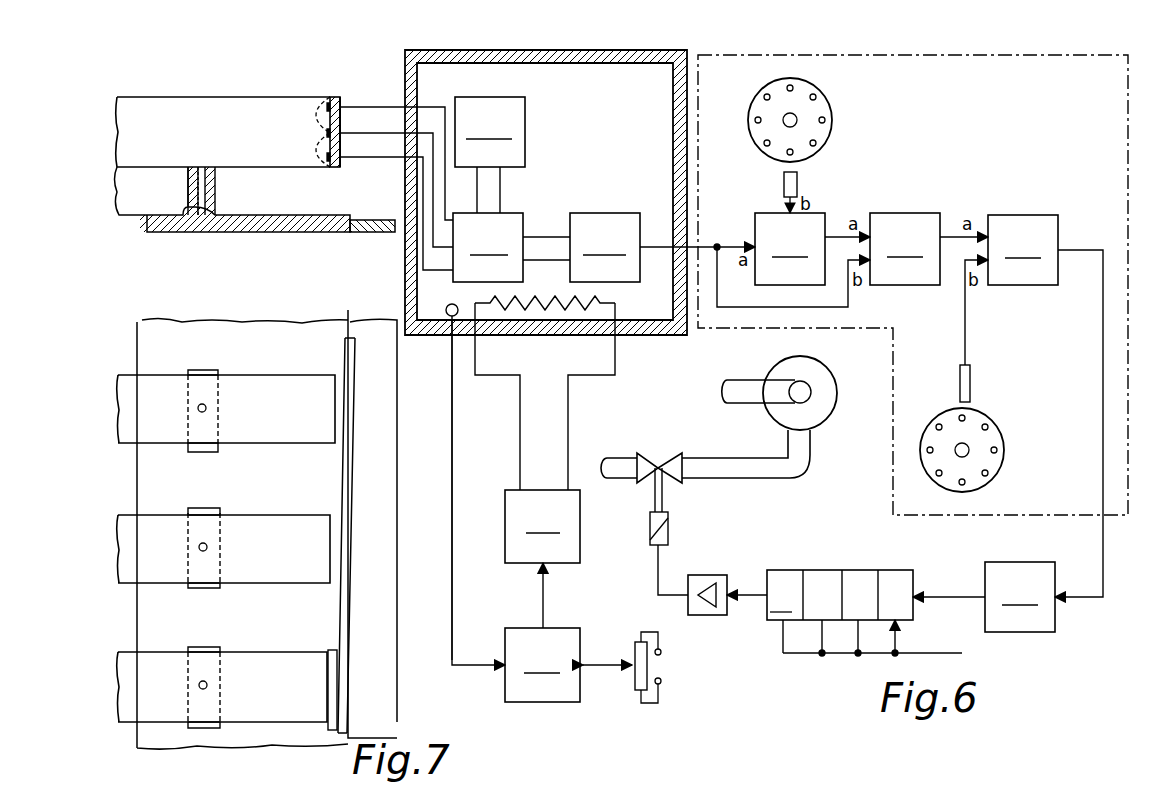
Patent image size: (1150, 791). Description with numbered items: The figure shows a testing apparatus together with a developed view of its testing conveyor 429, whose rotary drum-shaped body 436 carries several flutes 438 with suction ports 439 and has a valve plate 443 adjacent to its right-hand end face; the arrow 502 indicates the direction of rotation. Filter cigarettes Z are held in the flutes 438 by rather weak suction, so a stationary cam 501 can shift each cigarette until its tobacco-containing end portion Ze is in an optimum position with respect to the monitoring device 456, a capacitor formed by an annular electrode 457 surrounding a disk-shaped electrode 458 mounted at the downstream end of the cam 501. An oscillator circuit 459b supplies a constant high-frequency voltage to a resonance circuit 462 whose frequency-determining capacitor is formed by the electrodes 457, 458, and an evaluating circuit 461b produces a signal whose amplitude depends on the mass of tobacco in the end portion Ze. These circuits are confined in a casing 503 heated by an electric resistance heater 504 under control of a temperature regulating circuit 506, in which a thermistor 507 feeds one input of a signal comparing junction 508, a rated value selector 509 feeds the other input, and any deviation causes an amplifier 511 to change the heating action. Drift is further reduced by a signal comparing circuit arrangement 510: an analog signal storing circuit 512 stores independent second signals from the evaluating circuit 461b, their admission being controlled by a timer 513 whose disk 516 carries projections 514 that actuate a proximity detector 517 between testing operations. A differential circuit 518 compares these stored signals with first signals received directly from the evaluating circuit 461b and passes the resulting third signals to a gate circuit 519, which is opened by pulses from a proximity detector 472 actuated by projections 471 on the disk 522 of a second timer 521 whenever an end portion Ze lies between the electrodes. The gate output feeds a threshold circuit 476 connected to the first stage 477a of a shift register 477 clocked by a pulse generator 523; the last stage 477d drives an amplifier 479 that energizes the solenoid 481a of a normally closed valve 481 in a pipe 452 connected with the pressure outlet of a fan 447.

In FIG. 6, the filter cigarette Z is at (166, 100).
In FIG. 7, the filter cigarette Z is at (286, 384).
In FIG. 6, the tobacco-containing end portion Ze is at (318, 98).
In FIG. 7, the testing conveyor 429 is at (113, 342).
In FIG. 6, the rotary drum-shaped body 436 is at (270, 232).
In FIG. 6, the flute 438 is at (188, 182).
In FIG. 7, the flute 438 is at (212, 352).
In FIG. 6, the suction port 439 is at (202, 188).
In FIG. 7, the suction port 439 is at (206, 410).
In FIG. 6, the valve plate 443 is at (388, 232).
In FIG. 7, the valve plate 443 is at (384, 434).
In FIG. 6, the fan 447 is at (833, 406).
In FIG. 6, the pipe 452 is at (774, 476).
In FIG. 6, the monitoring device 456 is at (326, 90).
In FIG. 7, the monitoring device 456 is at (360, 693).
In FIG. 6, the annular electrode 457 is at (338, 104).
In FIG. 6, the disk-shaped electrode 458 is at (340, 118).
In FIG. 6, the oscillator circuit 459b is at (490, 132).
In FIG. 6, the evaluating circuit 461b is at (605, 247).
In FIG. 6, the resonance circuit 462 is at (488, 247).
In FIG. 6, the projection 471 is at (988, 459).
In FIG. 6, the proximity detector 472 is at (970, 383).
In FIG. 6, the threshold circuit 476 is at (1020, 597).
In FIG. 6, the shift register 477 is at (840, 562).
In FIG. 6, the first stage 477a is at (895, 595).
In FIG. 6, the last stage 477d is at (783, 595).
In FIG. 6, the amplifier 479 is at (690, 618).
In FIG. 6, the normally closed valve 481 is at (680, 484).
In FIG. 6, the solenoid 481a is at (664, 534).
In FIG. 7, the stationary cam 501 is at (352, 520).
In FIG. 7, the arrow 502 is at (95, 432).
In FIG. 6, the casing 503 is at (658, 70).
In FIG. 6, the electric resistance heater 504 is at (516, 303).
In FIG. 6, the temperature regulating circuit 506 is at (490, 530).
In FIG. 6, the thermistor 507 is at (452, 304).
In FIG. 6, the signal comparing junction 508 is at (542, 665).
In FIG. 6, the rated value selector 509 is at (636, 655).
In FIG. 6, the signal comparing circuit arrangement 510 is at (1002, 58).
In FIG. 6, the amplifier 511 is at (542, 526).
In FIG. 6, the analog signal storing circuit 512 is at (790, 249).
In FIG. 6, the timer 513 is at (838, 166).
In FIG. 6, the projection 514 is at (820, 97).
In FIG. 6, the disk 516 is at (832, 128).
In FIG. 6, the proximity detector 517 is at (784, 186).
In FIG. 6, the differential circuit 518 is at (905, 249).
In FIG. 6, the gate circuit 519 is at (1023, 250).
In FIG. 6, the timer 521 is at (1010, 408).
In FIG. 6, the disk 522 is at (969, 488).
In FIG. 6, the pulse generator 523 is at (889, 643).